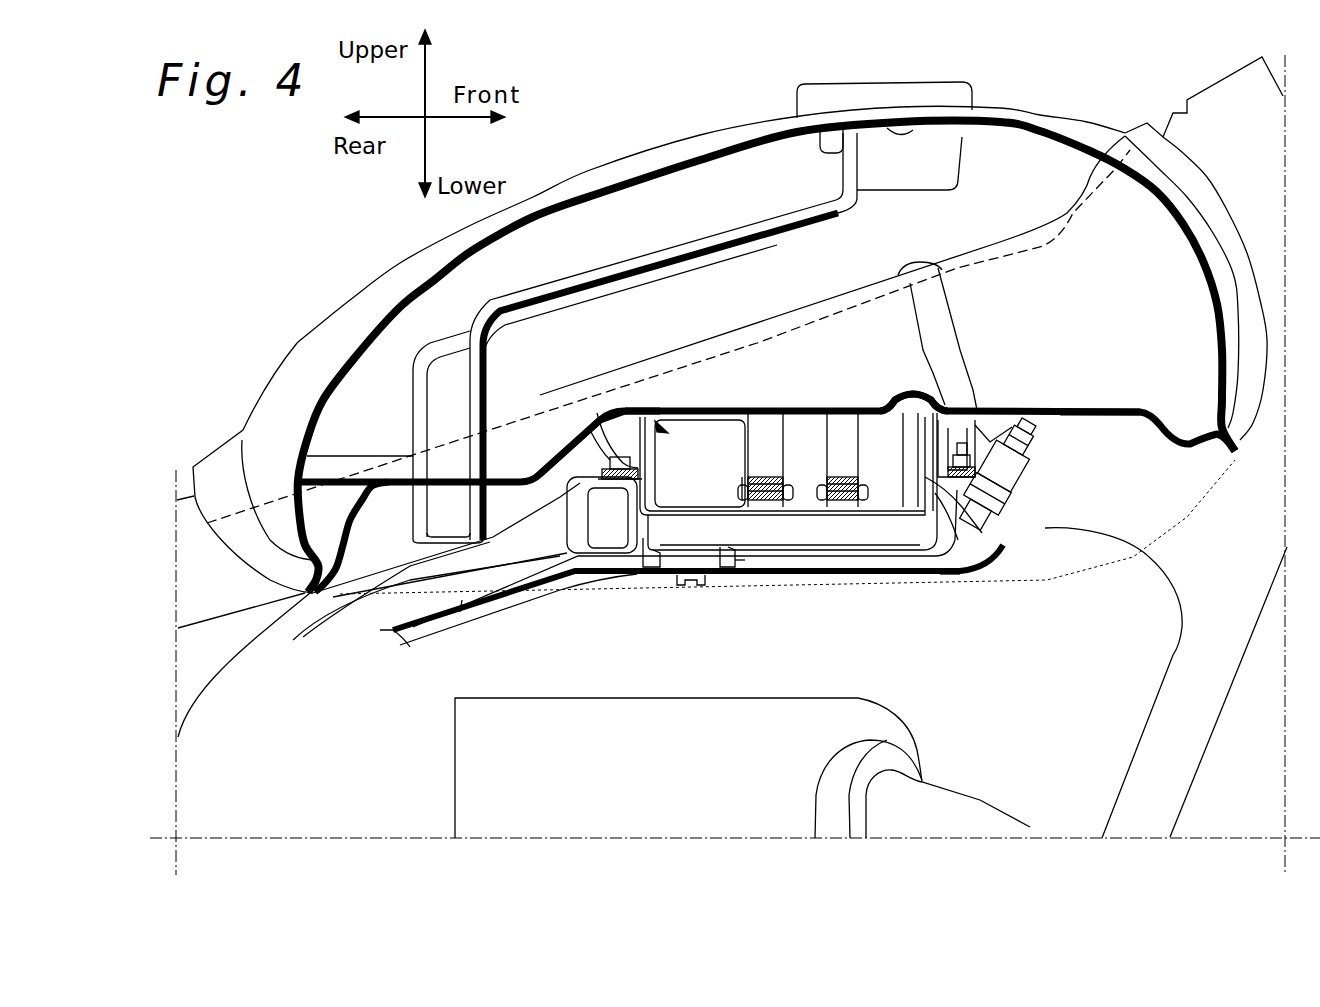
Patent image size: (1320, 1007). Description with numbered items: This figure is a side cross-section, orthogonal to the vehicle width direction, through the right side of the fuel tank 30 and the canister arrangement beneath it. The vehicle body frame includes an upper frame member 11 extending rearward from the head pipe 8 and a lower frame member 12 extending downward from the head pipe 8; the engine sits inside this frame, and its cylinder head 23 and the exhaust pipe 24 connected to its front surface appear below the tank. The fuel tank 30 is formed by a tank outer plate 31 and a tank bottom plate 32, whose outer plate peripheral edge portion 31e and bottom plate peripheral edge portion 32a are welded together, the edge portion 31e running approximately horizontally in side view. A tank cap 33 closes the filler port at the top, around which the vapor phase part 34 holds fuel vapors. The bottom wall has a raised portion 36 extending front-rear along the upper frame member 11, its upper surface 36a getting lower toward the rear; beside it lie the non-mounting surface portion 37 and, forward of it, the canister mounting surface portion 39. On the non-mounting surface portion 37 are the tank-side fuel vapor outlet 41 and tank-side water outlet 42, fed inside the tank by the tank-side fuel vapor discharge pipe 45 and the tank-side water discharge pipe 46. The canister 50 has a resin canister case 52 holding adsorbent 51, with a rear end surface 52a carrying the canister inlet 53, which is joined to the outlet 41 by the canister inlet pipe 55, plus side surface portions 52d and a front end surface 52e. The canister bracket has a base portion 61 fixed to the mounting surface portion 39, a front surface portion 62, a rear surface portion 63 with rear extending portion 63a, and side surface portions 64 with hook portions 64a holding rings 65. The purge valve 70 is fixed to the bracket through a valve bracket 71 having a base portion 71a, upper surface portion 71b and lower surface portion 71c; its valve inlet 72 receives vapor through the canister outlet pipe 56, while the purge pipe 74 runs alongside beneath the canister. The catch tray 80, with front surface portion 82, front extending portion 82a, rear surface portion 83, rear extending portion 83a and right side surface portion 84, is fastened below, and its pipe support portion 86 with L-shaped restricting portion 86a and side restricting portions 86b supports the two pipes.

The head pipe 8 is at (1197, 105).
The upper frame member 11 is at (757, 343).
The lower frame member 12 is at (1180, 773).
The cylinder head 23 is at (462, 790).
The exhaust pipe 24 is at (987, 807).
The fuel tank 30 is at (383, 273).
The tank outer plate 31 is at (320, 343).
The outer plate peripheral edge portion 31e is at (260, 560).
The tank bottom plate 32 is at (1140, 430).
The bottom plate peripheral edge portion 32a is at (345, 600).
The tank cap 33 is at (800, 98).
The vapor phase part 34 is at (957, 100).
The raised portion 36 is at (980, 237).
The upper surface 36a is at (883, 283).
The non-mounting surface portion 37 is at (400, 477).
The canister mounting surface portion 39 is at (1073, 407).
The tank-side fuel vapor outlet 41 is at (405, 505).
The tank-side water outlet 42 is at (415, 547).
The tank-side fuel vapor discharge pipe 45 is at (790, 242).
The tank-side water discharge pipe 46 is at (748, 226).
The canister 50 is at (632, 405).
The adsorbent 51 is at (665, 420).
The canister case 52 is at (793, 450).
The rear end surface 52a is at (603, 405).
The side surface portion 52d is at (870, 440).
The front end surface 52e is at (983, 530).
The canister inlet 53 is at (662, 476).
The canister inlet pipe 55 is at (537, 480).
The canister outlet pipe 56 is at (843, 574).
The base portion 61 is at (650, 400).
The front surface portion 62 is at (943, 339).
The rear surface portion 63 is at (600, 410).
The rear extending portion 63a is at (570, 420).
The side surface portion 64 is at (760, 440).
The hook portion 64a is at (795, 545).
The ring 65 is at (742, 477).
The purge valve 70 is at (1010, 493).
The valve bracket 71 is at (1000, 420).
The base portion 71a is at (963, 440).
The upper surface portion 71b is at (957, 420).
The lower surface portion 71c is at (977, 445).
The valve inlet 72 is at (1003, 590).
The purge pipe 74 is at (462, 600).
The catch tray 80 is at (935, 575).
The front surface portion 82 is at (967, 540).
The front extending portion 82a is at (970, 510).
The rear surface portion 83 is at (645, 568).
The rear extending portion 83a is at (575, 575).
The right side surface portion 84 is at (767, 550).
The pipe support portion 86 is at (740, 625).
The L-shaped restricting portion 86a is at (650, 590).
The side restricting portion 86b is at (697, 590).